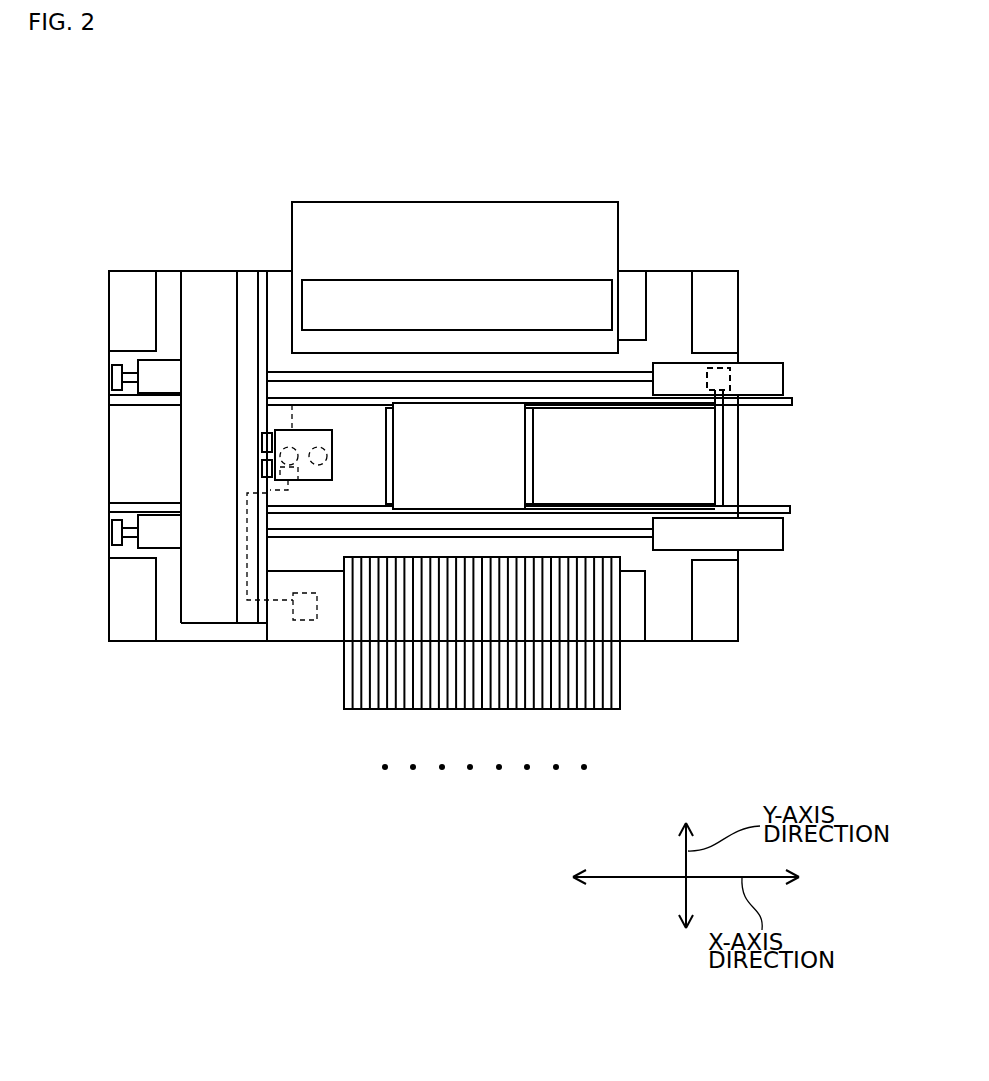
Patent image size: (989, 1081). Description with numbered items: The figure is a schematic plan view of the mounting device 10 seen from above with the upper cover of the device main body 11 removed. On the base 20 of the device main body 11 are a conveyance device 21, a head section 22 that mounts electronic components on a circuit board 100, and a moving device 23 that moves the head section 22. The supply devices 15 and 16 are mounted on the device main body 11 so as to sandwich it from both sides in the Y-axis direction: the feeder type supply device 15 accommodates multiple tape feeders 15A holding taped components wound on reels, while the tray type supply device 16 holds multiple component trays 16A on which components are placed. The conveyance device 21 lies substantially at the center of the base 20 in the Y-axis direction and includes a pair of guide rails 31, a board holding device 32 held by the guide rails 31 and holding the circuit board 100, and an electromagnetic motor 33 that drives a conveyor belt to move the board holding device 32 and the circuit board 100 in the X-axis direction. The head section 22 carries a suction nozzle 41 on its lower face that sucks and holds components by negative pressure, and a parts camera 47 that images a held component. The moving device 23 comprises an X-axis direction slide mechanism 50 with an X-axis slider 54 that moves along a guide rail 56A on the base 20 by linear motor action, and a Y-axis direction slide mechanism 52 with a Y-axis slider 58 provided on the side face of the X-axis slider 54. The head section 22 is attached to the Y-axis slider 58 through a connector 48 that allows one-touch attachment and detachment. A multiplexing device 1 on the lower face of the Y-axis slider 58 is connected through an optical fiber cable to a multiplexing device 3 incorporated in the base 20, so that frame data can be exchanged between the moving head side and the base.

The mounting device 10 is at (648, 116).
The supply device 16 is at (474, 185).
The component tray 16A is at (552, 290).
The moving device 23 is at (201, 240).
The base 20 is at (667, 293).
The device main body 11 is at (723, 270).
The parts camera 47 is at (292, 405).
The connector 48 is at (263, 442).
The head section 22 is at (310, 428).
The suction nozzle 41 is at (318, 478).
The board holding device 32 is at (533, 445).
The circuit board 100 is at (503, 475).
The guide rail 56A is at (634, 380).
The electromagnetic motor 33 is at (708, 368).
The guide rail 31 is at (793, 405).
The conveyance device 21 is at (766, 460).
The X-axis direction slide mechanism 50 is at (173, 448).
The Y-axis slider 58 is at (253, 443).
The Y-axis direction slide mechanism 52 is at (252, 457).
The X-axis slider 54 is at (203, 612).
The multiplexing device 1 is at (320, 478).
The multiplexing device 3 is at (305, 620).
The supply device 15 is at (640, 686).
The tape feeder 15A is at (344, 710).